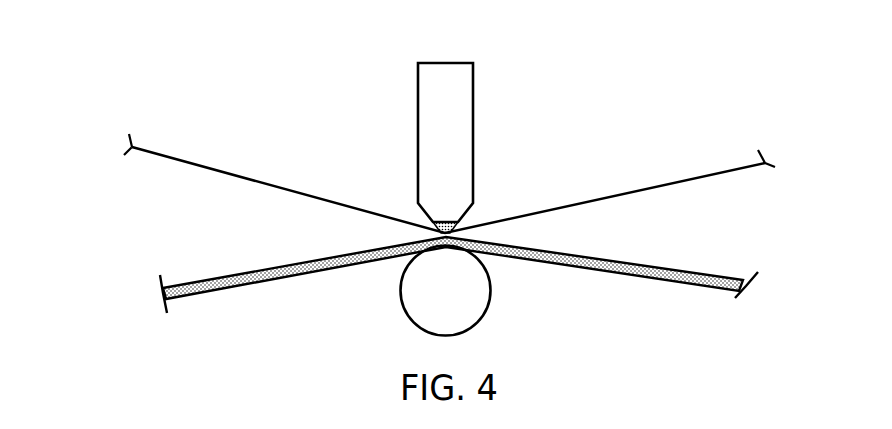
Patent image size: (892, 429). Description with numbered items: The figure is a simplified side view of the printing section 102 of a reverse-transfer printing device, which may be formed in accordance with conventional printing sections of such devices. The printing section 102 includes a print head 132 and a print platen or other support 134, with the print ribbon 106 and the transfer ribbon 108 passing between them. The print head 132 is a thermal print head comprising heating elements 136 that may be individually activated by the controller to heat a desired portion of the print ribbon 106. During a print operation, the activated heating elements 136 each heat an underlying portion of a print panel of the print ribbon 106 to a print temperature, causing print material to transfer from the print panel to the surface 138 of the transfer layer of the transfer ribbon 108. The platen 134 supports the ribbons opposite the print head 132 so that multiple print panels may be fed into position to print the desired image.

The printing section 102 is at (236, 84).
The print ribbon 106 is at (243, 178).
The transfer ribbon 108 is at (243, 283).
The print head 132 is at (458, 88).
The platen 134 is at (470, 306).
The heating elements 136 is at (448, 222).
The surface 138 is at (623, 262).